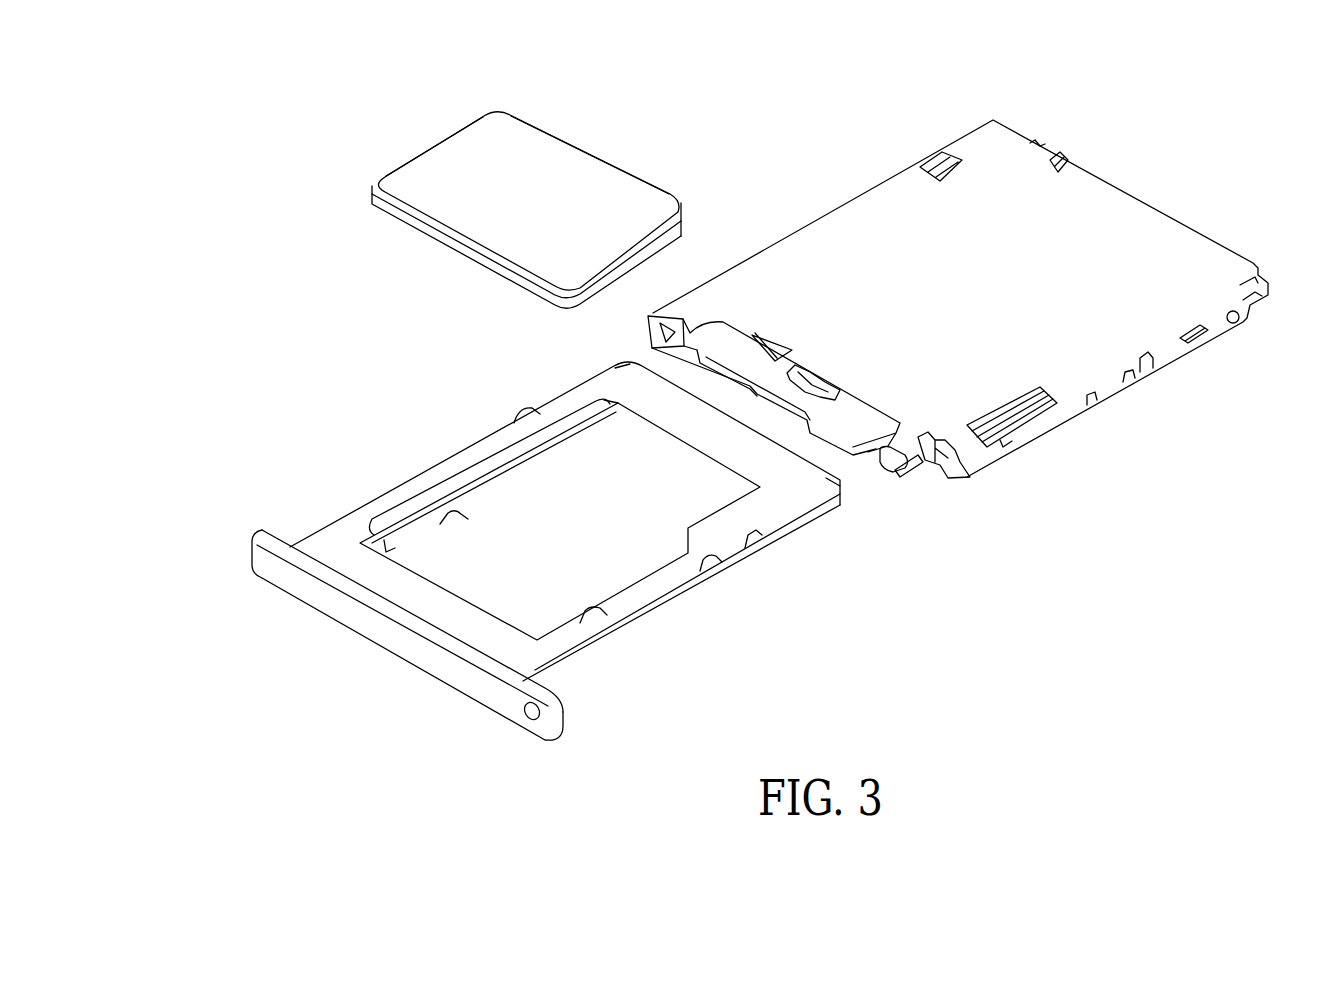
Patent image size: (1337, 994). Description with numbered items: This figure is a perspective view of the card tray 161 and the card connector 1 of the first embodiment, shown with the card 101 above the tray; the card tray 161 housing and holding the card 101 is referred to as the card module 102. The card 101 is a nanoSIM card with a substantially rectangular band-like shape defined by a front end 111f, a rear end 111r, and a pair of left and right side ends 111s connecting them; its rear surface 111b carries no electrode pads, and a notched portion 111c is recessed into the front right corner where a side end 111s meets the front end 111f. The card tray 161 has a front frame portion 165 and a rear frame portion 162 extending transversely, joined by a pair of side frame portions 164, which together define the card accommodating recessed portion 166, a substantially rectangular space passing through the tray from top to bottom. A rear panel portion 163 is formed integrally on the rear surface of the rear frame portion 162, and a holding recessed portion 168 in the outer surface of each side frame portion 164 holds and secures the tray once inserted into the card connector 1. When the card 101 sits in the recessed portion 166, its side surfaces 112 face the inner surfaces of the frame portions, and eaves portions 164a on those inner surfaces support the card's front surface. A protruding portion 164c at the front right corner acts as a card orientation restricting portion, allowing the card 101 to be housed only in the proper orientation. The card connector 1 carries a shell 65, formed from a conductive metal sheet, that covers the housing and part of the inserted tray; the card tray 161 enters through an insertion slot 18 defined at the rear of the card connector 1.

The card connector 1 is at (1160, 194).
The insertion slot 18 is at (887, 458).
The shell 65 is at (1196, 232).
The card 101 is at (441, 143).
The card module 102 is at (241, 109).
The rear surface 111b is at (525, 157).
The notched portion 111c is at (683, 215).
The front end 111f is at (582, 151).
The rear end 111r is at (447, 241).
The side ends 111s is at (400, 168).
The side surfaces 112 is at (623, 269).
The card tray 161 is at (320, 535).
The rear frame portion 162 is at (490, 633).
The rear panel portion 163 is at (405, 650).
The side frame portions 164 is at (413, 482).
The eaves portions 164a is at (437, 517).
The protruding portion 164c is at (698, 532).
The front frame portion 165 is at (612, 376).
The card accommodating recessed portion 166 is at (670, 603).
The holding recessed portion 168 is at (514, 420).